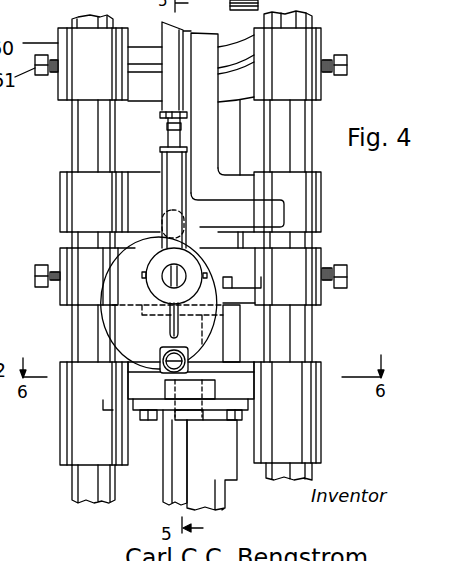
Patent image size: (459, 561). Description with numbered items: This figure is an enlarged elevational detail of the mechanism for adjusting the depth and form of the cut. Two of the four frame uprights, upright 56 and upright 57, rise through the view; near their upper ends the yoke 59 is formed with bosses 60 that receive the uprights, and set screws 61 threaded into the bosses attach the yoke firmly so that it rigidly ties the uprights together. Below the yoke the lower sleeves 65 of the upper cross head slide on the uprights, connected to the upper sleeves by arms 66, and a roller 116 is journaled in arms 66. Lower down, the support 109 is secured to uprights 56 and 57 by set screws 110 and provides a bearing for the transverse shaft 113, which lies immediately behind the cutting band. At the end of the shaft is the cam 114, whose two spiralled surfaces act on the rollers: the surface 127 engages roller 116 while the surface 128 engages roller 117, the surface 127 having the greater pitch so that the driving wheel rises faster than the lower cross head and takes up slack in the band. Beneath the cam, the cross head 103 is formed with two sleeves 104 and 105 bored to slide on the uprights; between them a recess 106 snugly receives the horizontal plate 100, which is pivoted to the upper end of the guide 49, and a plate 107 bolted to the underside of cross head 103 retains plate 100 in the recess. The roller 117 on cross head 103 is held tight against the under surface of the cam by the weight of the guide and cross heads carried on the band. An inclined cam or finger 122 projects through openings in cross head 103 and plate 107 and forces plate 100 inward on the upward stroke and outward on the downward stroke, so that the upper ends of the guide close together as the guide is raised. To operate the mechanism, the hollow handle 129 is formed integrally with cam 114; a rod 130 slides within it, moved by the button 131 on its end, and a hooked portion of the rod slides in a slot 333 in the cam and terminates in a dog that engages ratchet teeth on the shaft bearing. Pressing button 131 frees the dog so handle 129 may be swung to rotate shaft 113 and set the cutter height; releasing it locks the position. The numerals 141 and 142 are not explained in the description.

The upright 56 is at (299, 120).
The upright 57 is at (97, 493).
The yoke 59 is at (237, 82).
The boss 60 is at (301, 47).
The set screw 61 is at (349, 62).
The lower sleeve 65 is at (70, 177).
The arm 66 is at (236, 213).
The plate 100 is at (205, 393).
The cross head 103 is at (244, 382).
The sleeve 104 is at (75, 447).
The sleeve 105 is at (302, 442).
The recess 106 is at (160, 386).
The plate 107 is at (217, 402).
The support 109 is at (262, 293).
The set screw 110 is at (45, 282).
The transverse shaft 113 is at (185, 275).
The cam 114 is at (123, 323).
The roller 116 is at (193, 208).
The roller 117 is at (319, 368).
The inclined cam 122 is at (183, 413).
The cam surface 127 is at (123, 258).
The cam surface 128 is at (222, 322).
The handle 129 is at (170, 182).
The rod 130 is at (172, 133).
The button 131 is at (160, 114).
The slot 333 is at (170, 330).
The adjacent figure part 141 is at (78, 5).
The adjacent figure part 142 is at (131, 6).
The guide 49 is at (9, 482).